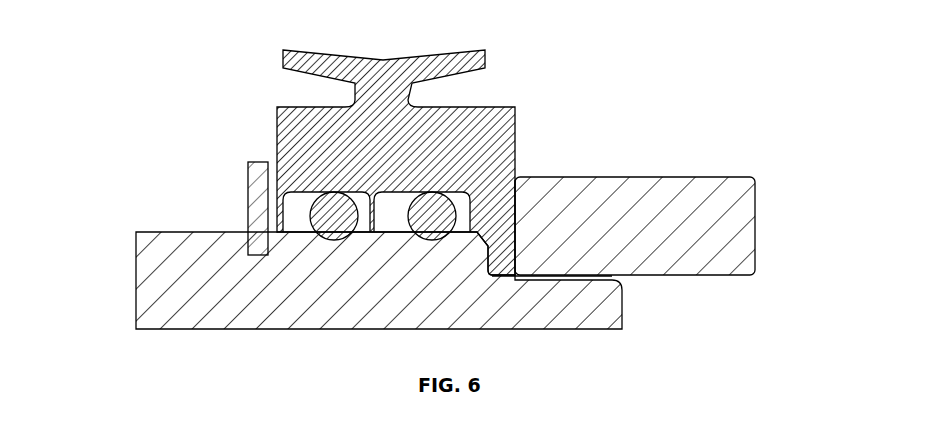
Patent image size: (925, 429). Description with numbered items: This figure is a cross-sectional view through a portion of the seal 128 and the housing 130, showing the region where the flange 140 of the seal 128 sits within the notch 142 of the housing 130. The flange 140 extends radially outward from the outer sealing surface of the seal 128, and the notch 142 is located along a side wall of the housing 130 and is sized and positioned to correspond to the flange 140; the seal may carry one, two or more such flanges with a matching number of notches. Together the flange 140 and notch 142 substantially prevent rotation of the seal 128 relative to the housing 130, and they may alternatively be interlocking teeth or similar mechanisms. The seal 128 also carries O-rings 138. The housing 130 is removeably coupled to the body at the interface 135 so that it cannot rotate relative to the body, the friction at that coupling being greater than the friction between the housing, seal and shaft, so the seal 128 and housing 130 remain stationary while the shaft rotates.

The seal 128 is at (276, 116).
The housing 130 is at (757, 257).
The interface 135 is at (137, 287).
The O-rings 138 is at (408, 201).
The flange 140 is at (514, 236).
The notch 142 is at (514, 278).